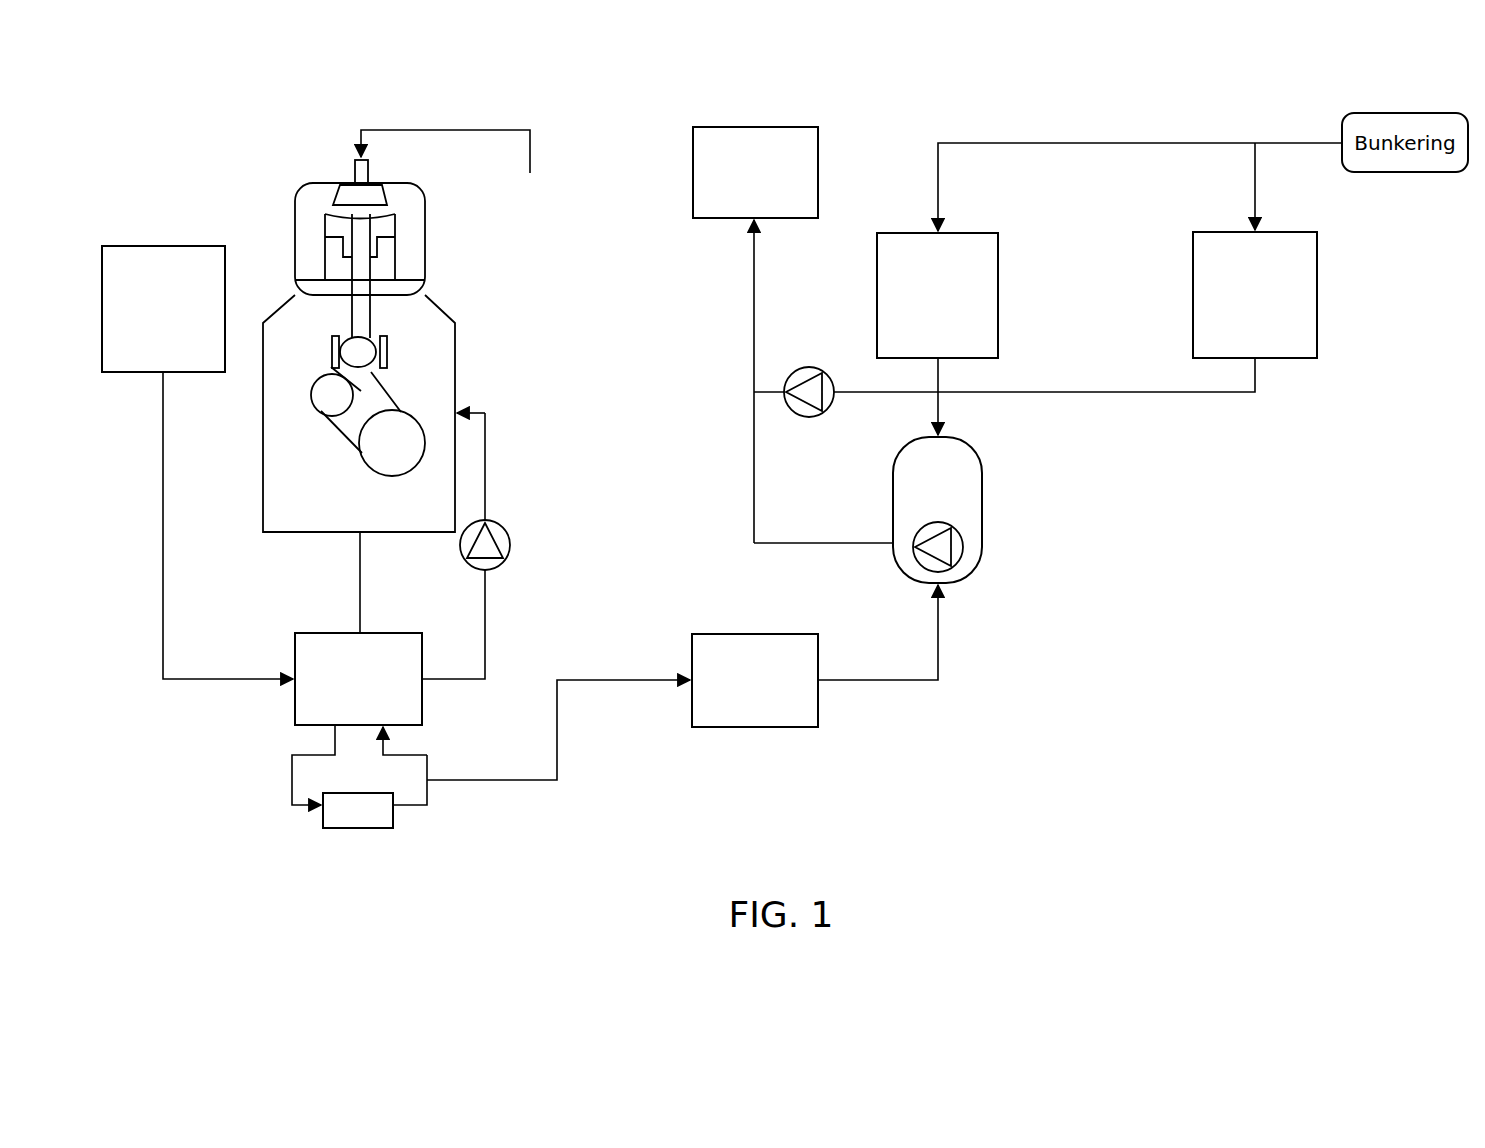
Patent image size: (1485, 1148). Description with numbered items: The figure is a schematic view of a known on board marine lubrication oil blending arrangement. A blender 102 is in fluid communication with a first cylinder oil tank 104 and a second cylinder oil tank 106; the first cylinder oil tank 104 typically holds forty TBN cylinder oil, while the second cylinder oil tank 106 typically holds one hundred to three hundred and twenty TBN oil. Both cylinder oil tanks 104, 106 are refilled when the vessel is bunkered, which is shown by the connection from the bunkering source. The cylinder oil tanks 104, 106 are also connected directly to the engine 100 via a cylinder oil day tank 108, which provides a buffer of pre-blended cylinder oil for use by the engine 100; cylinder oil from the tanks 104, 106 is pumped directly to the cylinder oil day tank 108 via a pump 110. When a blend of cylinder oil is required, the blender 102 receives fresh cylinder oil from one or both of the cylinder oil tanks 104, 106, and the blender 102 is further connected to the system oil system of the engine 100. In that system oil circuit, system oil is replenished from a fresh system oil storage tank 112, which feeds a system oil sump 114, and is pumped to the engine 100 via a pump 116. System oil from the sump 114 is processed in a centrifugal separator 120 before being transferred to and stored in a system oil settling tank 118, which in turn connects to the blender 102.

The engine 100 is at (456, 368).
The blender 102 is at (983, 488).
The first cylinder oil tank 104 is at (999, 266).
The second cylinder oil tank 106 is at (1318, 266).
The cylinder oil day tank 108 is at (713, 127).
The pump 110 is at (812, 368).
The fresh system oil storage tank 112 is at (163, 246).
The system oil sump 114 is at (320, 633).
The pump 116 is at (506, 526).
The system oil settling tank 118 is at (742, 727).
The centrifugal separator 120 is at (323, 815).